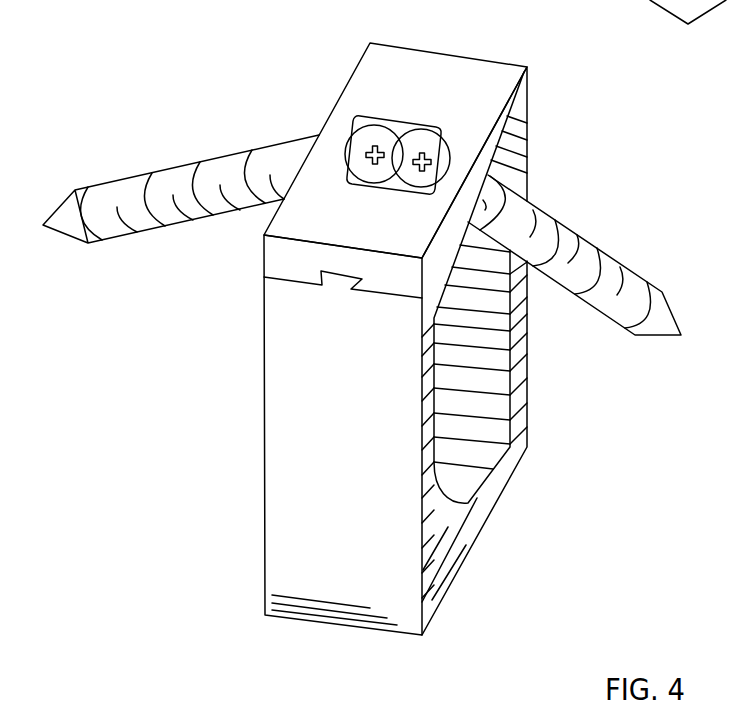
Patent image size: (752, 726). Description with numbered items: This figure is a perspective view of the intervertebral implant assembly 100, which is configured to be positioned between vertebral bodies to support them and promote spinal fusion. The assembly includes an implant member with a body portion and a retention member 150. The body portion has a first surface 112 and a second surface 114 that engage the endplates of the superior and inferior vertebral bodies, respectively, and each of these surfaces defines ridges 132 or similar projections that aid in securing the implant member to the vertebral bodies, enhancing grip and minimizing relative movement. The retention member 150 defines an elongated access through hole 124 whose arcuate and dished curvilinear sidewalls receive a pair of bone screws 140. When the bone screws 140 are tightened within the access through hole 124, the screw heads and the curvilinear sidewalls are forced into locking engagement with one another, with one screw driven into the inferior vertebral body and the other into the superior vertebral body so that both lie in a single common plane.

The intervertebral implant assembly 100 is at (362, 337).
The first surface 112 is at (460, 550).
The second surface 114 is at (263, 482).
The access through hole 124 is at (398, 128).
The ridges 132 is at (527, 432).
The bone screws 140 is at (425, 143).
The retention member 150 is at (483, 88).